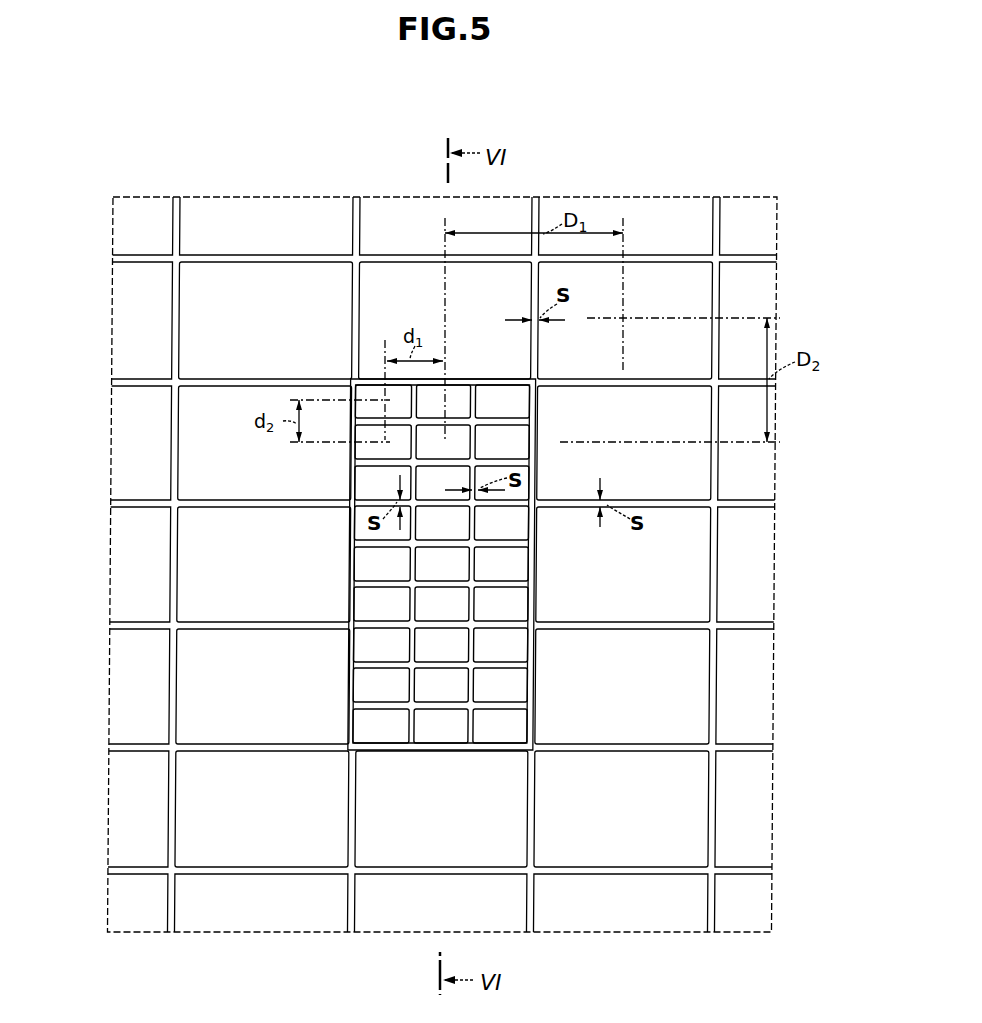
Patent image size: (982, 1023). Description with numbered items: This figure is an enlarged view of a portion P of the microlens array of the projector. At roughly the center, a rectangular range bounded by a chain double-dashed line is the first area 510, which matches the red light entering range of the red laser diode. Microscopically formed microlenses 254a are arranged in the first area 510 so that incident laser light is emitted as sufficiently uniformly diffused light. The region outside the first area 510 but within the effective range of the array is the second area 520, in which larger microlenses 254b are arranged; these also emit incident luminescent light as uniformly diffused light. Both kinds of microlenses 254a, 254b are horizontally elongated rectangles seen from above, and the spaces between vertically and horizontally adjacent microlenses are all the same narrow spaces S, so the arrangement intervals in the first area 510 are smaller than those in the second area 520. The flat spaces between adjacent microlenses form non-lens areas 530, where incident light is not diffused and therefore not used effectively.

The portion of the microlens array P is at (700, 150).
The microlenses 254a is at (380, 486).
The microlenses 254b is at (218, 548).
The first area 510 is at (535, 580).
The second area 520 is at (685, 718).
The non-lens areas 530 is at (375, 615).